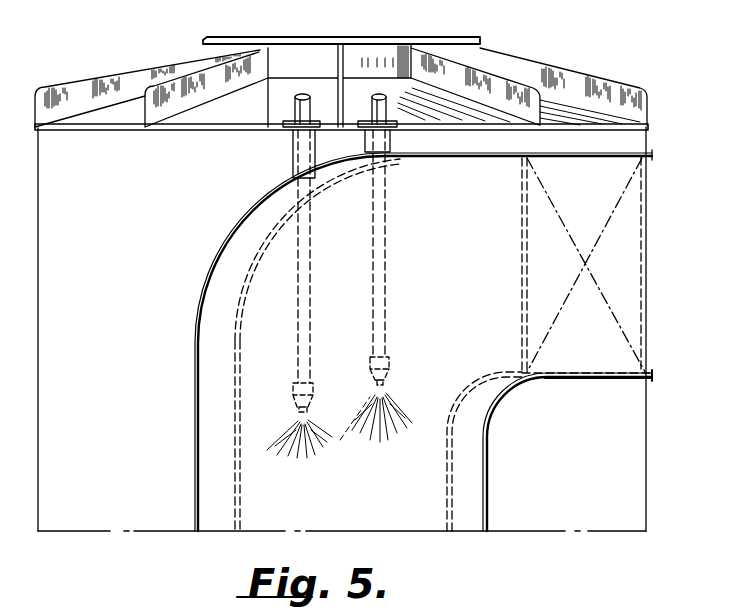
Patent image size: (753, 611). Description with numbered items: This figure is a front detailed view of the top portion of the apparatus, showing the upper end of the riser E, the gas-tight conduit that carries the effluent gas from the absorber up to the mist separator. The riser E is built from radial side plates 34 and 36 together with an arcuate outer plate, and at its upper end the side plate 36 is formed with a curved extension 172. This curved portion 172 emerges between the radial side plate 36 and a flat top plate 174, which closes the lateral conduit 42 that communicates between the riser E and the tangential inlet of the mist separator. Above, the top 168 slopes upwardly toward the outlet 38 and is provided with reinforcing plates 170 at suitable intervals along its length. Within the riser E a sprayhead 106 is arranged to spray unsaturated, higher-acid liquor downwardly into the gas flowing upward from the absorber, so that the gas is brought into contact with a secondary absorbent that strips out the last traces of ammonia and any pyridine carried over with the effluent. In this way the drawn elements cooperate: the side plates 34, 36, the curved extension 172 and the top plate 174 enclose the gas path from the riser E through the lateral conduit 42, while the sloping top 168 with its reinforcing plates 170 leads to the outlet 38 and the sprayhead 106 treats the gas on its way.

The reinforcing plates 170 is at (183, 92).
The top 168 is at (282, 95).
The outlet 38 is at (388, 62).
The flat top plate 174 is at (547, 150).
The curved extension 172 is at (273, 208).
The sprayhead 106 is at (375, 374).
The lateral conduit 42 is at (547, 328).
The radial side plate 34 is at (473, 469).
The radial side plate 36 is at (221, 508).
The riser E is at (395, 506).